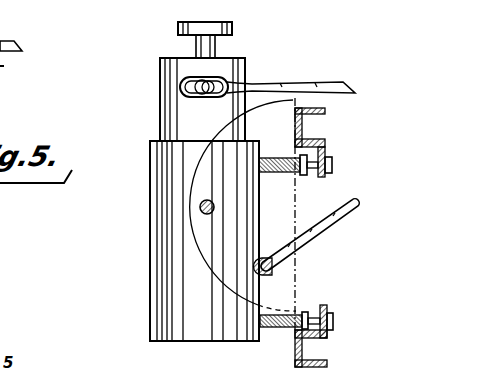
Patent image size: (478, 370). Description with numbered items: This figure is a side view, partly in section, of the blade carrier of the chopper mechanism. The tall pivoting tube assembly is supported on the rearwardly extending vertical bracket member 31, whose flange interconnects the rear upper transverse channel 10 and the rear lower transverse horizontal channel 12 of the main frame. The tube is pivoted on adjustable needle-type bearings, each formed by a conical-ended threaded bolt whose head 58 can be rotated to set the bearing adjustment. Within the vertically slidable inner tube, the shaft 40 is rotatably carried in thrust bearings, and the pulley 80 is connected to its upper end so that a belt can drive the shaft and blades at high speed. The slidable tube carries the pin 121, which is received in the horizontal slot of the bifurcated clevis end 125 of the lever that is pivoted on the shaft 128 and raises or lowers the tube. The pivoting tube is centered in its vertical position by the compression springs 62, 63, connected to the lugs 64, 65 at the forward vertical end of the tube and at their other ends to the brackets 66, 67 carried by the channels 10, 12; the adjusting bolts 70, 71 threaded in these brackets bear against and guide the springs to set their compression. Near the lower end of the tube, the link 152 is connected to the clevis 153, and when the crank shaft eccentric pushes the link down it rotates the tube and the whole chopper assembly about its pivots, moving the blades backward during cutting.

The shaft 128 is at (15, 36).
The vertical bracket member 31 is at (194, 170).
The pin 121 is at (185, 97).
The bifurcated clevis end 125 is at (182, 86).
The pulley 80 is at (222, 28).
The shaft 40 is at (212, 50).
The upper transverse channel 10 is at (310, 143).
The lug 64 is at (262, 164).
The compression spring 62 is at (266, 168).
The bracket 66 is at (319, 171).
The adjusting bolt 70 is at (333, 165).
The head 58 is at (200, 210).
The clevis 153 is at (263, 266).
The link 152 is at (318, 238).
The lug 65 is at (260, 321).
The compression spring 63 is at (296, 313).
The bracket 67 is at (323, 310).
The adjusting bolt 71 is at (333, 322).
The lower transverse horizontal channel 12 is at (308, 354).